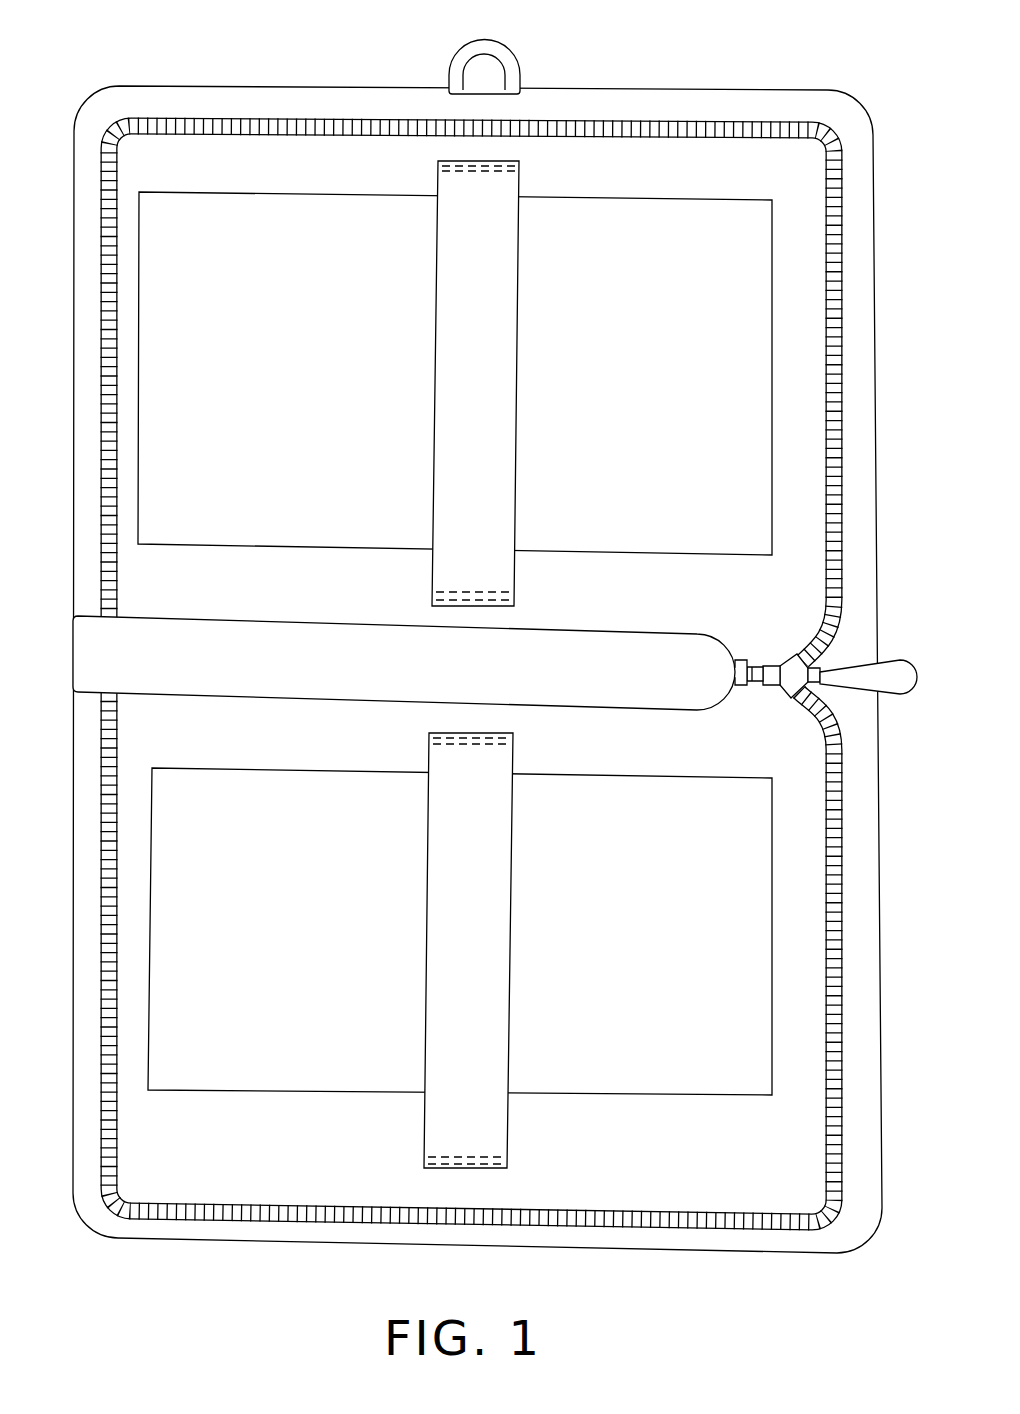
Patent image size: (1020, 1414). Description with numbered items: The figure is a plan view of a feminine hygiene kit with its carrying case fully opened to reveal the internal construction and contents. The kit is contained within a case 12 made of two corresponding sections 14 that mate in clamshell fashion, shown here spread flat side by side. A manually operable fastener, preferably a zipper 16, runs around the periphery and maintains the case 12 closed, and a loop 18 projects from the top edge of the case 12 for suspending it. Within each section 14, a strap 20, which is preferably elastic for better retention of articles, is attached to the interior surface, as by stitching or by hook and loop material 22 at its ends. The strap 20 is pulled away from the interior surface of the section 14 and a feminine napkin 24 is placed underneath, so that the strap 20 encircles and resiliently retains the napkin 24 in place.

The case 12 is at (460, 627).
The section 14 is at (67, 334).
The zipper 16 is at (846, 624).
The loop 18 is at (515, 52).
The strap 20 is at (519, 323).
The hook and loop material 22 is at (500, 172).
The feminine napkin 24 is at (240, 390).